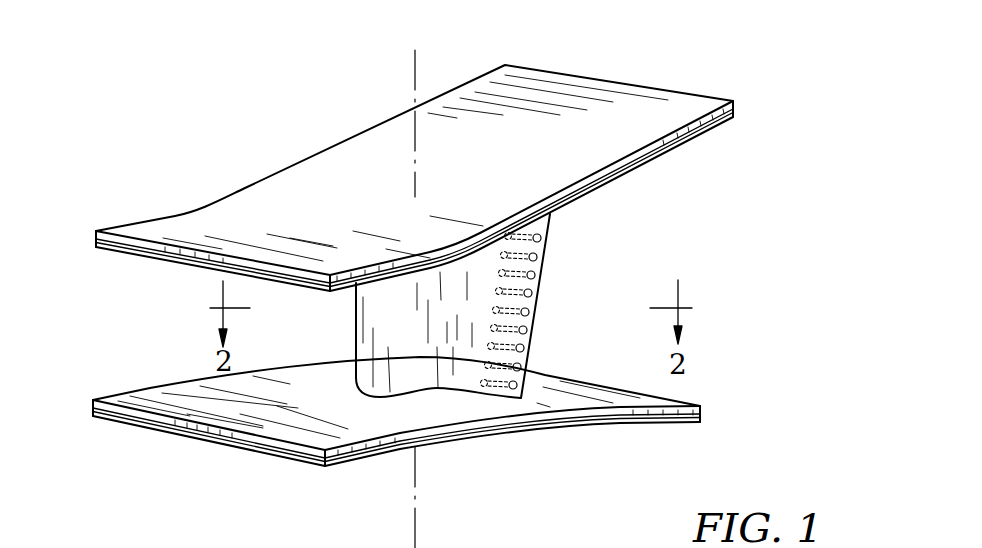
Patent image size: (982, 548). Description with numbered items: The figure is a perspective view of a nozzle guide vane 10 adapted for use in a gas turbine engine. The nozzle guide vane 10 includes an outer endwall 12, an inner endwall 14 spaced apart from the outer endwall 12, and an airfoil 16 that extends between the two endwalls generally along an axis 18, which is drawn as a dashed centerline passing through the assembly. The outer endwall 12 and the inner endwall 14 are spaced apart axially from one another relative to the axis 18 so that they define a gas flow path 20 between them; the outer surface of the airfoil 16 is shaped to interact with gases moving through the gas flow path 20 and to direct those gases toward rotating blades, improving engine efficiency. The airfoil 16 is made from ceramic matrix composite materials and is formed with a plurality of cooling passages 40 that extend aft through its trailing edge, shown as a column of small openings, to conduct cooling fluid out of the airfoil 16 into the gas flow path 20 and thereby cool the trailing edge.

The nozzle guide vane 10 is at (396, 276).
The outer endwall 12 is at (230, 180).
The inner endwall 14 is at (226, 462).
The airfoil 16 is at (443, 306).
The axis 18 is at (412, 89).
The gas flow path 20 is at (117, 328).
The cooling passages 40 is at (560, 264).